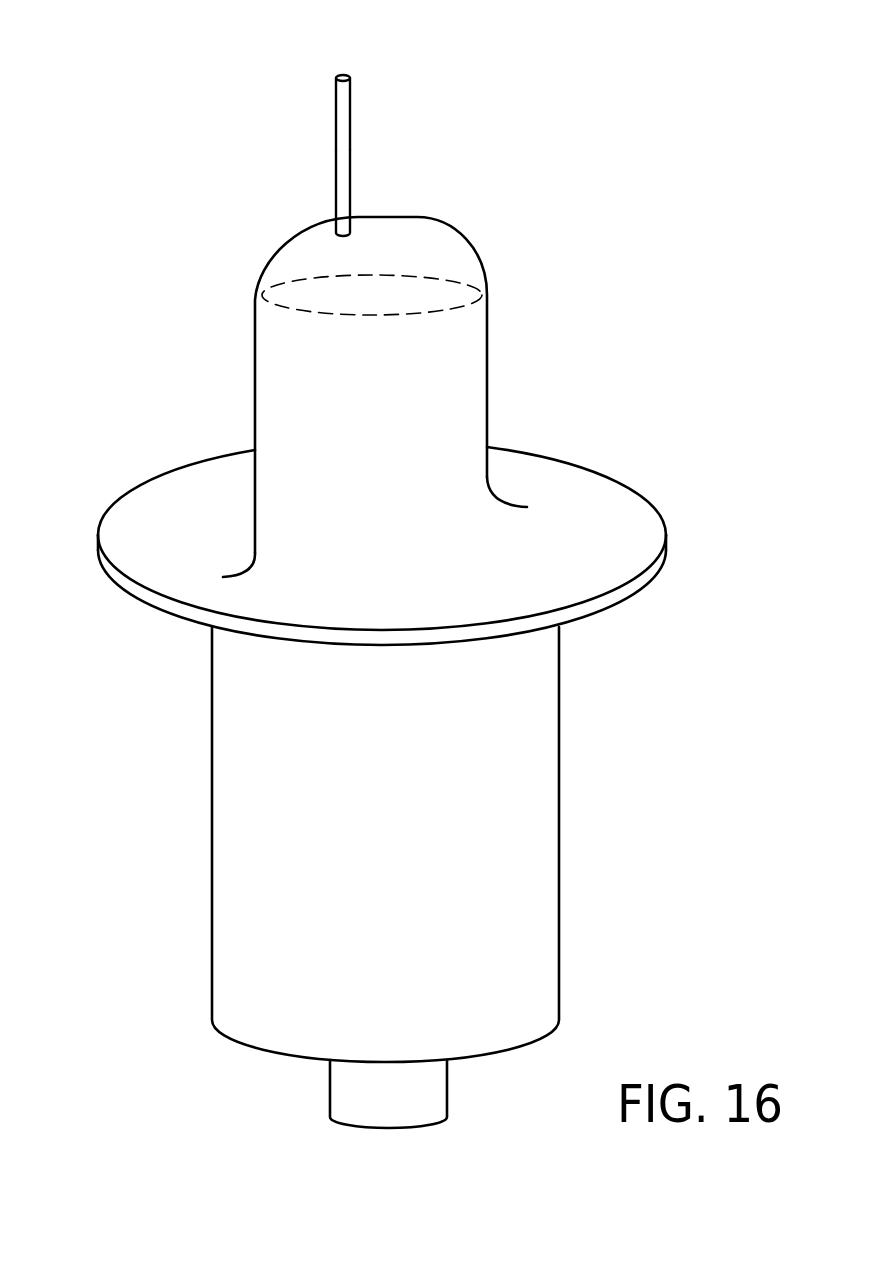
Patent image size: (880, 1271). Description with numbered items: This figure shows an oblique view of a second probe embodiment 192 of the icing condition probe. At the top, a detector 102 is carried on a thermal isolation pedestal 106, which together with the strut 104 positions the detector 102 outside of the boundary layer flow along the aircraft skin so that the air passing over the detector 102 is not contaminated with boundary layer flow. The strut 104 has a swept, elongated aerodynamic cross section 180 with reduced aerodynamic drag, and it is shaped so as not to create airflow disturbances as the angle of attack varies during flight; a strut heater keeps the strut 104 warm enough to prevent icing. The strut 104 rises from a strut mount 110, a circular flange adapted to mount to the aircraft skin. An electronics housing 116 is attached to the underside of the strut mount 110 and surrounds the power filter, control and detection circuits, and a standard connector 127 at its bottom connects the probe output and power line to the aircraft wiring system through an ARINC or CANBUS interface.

The second probe embodiment 192 is at (180, 68).
The detector 102 is at (348, 117).
The thermal isolation pedestal 106 is at (352, 195).
The swept, elongated aerodynamic cross section 180 is at (430, 278).
The strut 104 is at (487, 370).
The strut mount 110 is at (657, 497).
The electronics housing 116 is at (559, 798).
The standard connector 127 is at (448, 1107).